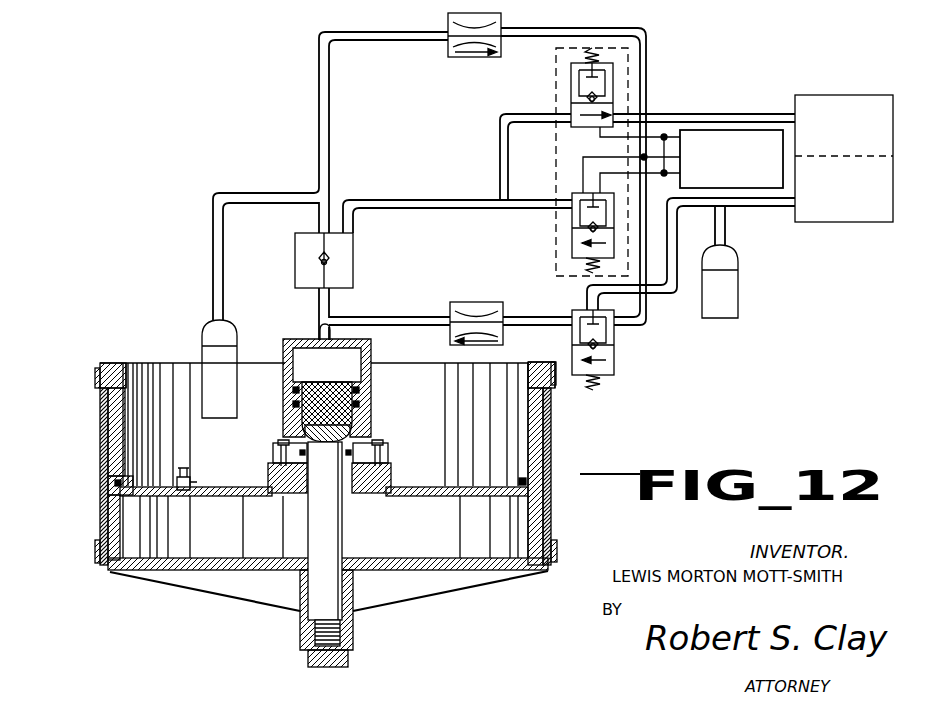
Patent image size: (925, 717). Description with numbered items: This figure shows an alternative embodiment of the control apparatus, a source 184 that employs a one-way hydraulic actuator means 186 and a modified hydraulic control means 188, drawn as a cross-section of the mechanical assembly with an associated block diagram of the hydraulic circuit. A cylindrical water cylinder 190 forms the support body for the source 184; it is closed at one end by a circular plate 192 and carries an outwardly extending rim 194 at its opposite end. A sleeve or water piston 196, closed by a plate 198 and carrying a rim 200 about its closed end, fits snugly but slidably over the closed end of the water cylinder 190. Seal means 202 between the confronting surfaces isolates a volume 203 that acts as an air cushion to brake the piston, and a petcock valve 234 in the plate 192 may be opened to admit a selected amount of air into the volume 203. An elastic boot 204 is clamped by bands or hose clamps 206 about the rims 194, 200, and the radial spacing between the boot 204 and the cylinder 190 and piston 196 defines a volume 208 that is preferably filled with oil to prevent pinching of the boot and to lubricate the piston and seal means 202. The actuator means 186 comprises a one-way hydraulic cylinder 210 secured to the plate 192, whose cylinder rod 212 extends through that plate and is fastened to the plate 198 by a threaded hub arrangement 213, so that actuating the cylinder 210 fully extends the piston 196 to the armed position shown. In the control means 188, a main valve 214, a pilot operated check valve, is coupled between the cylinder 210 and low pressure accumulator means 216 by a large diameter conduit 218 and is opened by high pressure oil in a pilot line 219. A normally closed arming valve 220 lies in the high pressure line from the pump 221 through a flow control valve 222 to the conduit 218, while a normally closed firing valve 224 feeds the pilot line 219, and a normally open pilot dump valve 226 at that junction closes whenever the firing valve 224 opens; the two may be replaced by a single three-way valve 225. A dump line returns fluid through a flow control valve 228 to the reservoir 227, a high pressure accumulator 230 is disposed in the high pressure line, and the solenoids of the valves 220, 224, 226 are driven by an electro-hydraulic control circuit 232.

The source 184 is at (203, 251).
The hydraulic actuator means 186 is at (270, 436).
The hydraulic control means 188 is at (690, 326).
The water cylinder 190 is at (518, 428).
The circular plate 192 is at (410, 496).
The rim 194 is at (551, 396).
The water piston 196 is at (535, 504).
The plate 198 is at (405, 570).
The rim 200 is at (552, 528).
The seal means 202 is at (545, 480).
The isolated volume 203 is at (243, 532).
The boot 204 is at (100, 441).
The bands or hose clamps 206 is at (95, 552).
The volume 208 is at (543, 429).
The one-way hydraulic cylinder 210 is at (371, 402).
The cylinder rod 212 is at (342, 520).
The threaded hub arrangement 213 is at (360, 628).
The main valve 214 is at (353, 261).
The low pressure accumulator means 216 is at (203, 337).
The conduit 218 is at (322, 307).
The pilot line 219 is at (366, 200).
The arming valve 220 is at (614, 356).
The pump or high pressure source 221 is at (853, 230).
The flow control valve 222 is at (503, 306).
The firing valve 224 is at (578, 222).
The 3-way valve 225 is at (548, 102).
The pilot dump valve 226 is at (571, 81).
The reservoir 227 is at (843, 88).
The flow control valve 228 is at (501, 22).
The high pressure accumulator 230 is at (738, 299).
The electro-hydraulic control circuit 232 is at (741, 130).
The petcock valve 234 is at (188, 476).